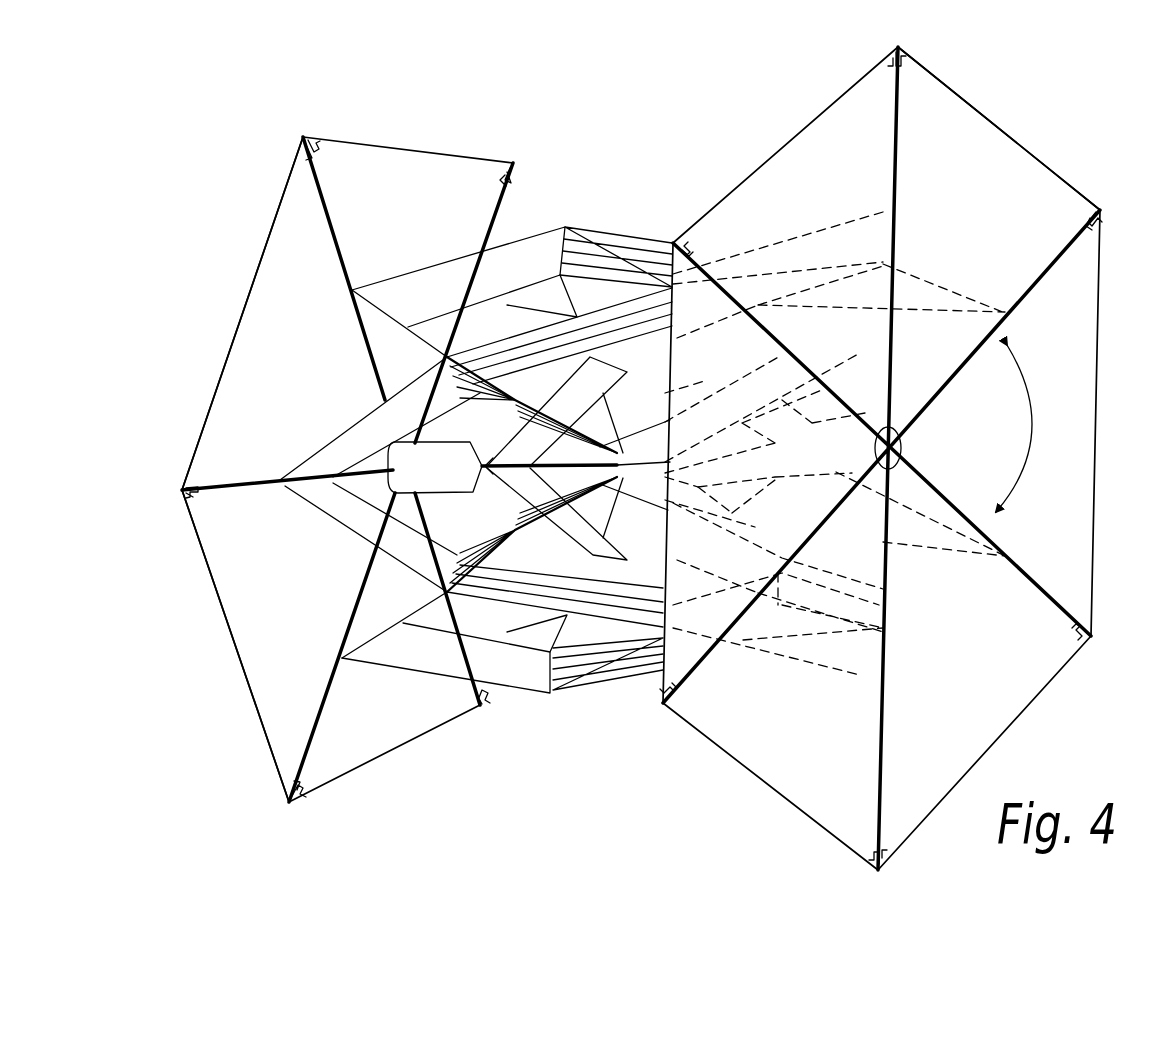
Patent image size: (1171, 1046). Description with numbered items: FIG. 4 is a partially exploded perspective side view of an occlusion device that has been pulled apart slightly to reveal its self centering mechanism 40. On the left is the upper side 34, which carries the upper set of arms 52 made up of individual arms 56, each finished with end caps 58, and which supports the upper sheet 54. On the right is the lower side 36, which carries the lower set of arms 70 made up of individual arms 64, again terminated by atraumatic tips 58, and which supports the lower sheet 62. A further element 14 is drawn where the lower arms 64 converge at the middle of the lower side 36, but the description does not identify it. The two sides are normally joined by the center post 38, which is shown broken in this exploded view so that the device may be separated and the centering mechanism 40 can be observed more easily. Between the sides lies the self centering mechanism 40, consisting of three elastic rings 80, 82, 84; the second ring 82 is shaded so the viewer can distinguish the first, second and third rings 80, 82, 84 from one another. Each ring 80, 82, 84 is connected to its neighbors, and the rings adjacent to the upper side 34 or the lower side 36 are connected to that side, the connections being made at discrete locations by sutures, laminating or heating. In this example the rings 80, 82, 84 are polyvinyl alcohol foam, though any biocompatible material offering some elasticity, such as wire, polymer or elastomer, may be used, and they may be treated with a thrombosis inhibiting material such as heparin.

The hub 14 is at (902, 442).
The upper side 34 is at (385, 121).
The lower side 36 is at (1030, 108).
The center post 38 is at (418, 479).
The self centering mechanism 40 is at (604, 162).
The upper set of arms 52 is at (254, 508).
The upper sheet 54 is at (286, 334).
The individual arms 56 is at (340, 256).
The end caps 58 is at (314, 150).
The lower sheet 62 is at (1006, 214).
The individual arms 64 is at (900, 146).
The lower set of arms 70 is at (1022, 428).
The first ring 80 is at (431, 294).
The second ring 82 is at (592, 248).
The third ring 84 is at (653, 484).